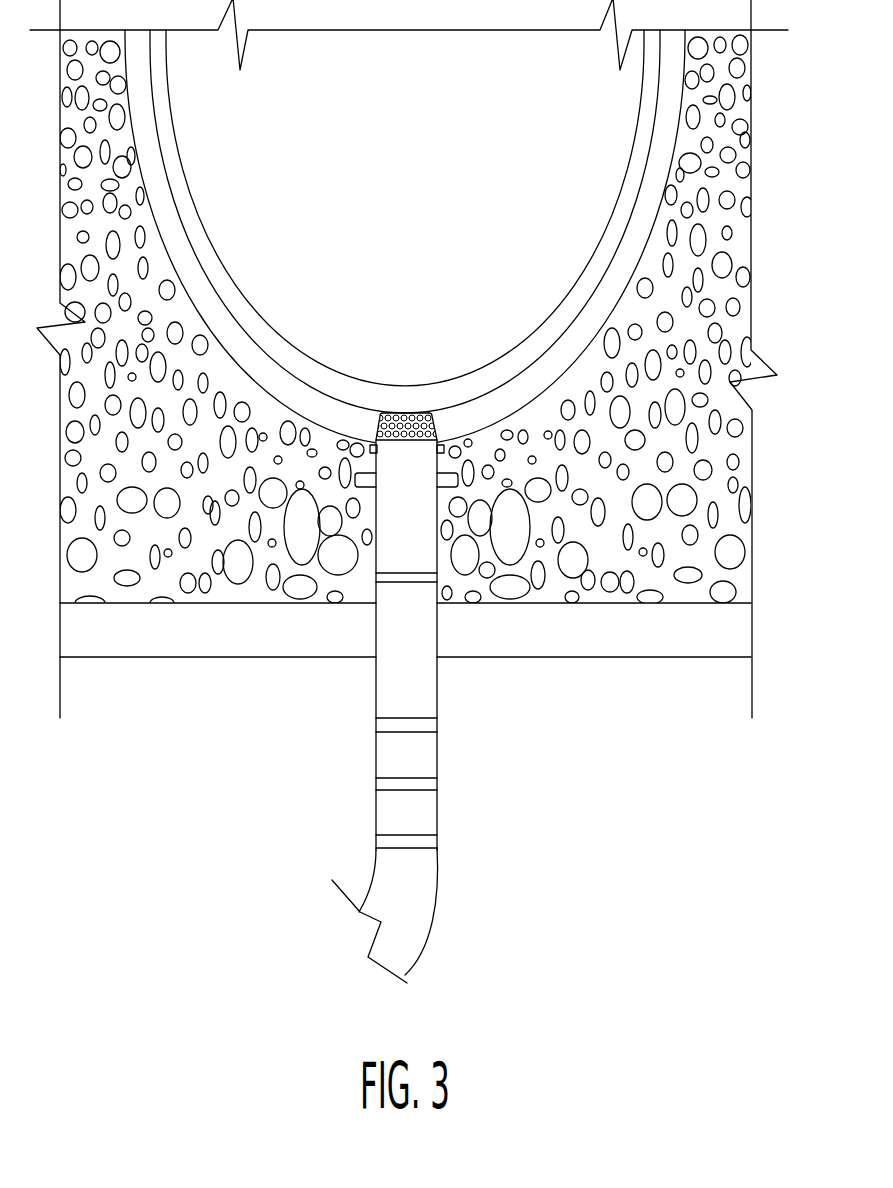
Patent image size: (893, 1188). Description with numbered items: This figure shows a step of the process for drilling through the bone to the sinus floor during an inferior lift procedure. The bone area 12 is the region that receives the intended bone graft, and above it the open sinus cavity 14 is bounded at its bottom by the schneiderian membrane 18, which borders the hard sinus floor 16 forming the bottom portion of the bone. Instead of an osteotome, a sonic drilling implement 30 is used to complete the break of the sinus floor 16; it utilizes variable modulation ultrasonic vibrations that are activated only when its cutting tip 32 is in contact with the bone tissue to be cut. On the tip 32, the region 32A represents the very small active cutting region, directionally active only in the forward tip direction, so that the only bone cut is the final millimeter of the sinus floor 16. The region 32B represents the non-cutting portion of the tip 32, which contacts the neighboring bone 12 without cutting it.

The bone area 12 is at (650, 397).
The sinus cavity 14 is at (392, 130).
The sinus floor 16 is at (268, 382).
The schneiderian membrane 18 is at (213, 260).
The sonic drilling implement 30 is at (412, 907).
The cutting tip 32 is at (420, 565).
The active region 32A is at (400, 413).
The non-cutting portion 32B is at (428, 497).